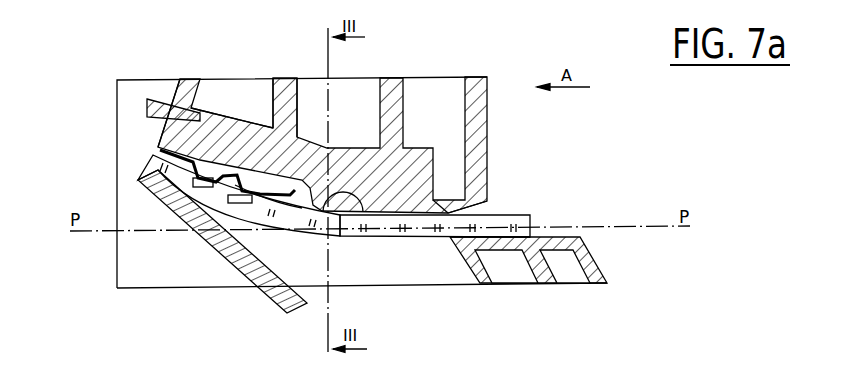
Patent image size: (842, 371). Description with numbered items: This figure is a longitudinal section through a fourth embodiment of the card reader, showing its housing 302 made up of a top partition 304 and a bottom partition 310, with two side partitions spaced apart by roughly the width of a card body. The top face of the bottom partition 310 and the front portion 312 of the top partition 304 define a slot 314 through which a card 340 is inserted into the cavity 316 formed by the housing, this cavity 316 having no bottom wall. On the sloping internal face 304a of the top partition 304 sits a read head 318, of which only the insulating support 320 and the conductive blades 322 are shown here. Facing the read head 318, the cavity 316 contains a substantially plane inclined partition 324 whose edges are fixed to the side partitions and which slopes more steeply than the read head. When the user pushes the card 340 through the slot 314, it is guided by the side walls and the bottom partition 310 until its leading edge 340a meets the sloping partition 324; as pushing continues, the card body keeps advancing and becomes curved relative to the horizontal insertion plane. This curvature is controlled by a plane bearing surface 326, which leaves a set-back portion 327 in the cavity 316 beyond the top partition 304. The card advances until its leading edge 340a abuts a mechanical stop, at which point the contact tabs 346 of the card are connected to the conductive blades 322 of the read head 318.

The housing 302 is at (527, 202).
The top partition 304 is at (413, 118).
The sloping internal face 304a is at (230, 170).
The bottom partition 310 is at (595, 267).
The front portion 312 is at (447, 210).
The slot 314 is at (462, 212).
The cavity 316 is at (302, 320).
The read head 318 is at (203, 158).
The insulating support 320 is at (148, 100).
The conductive blades 322 is at (250, 183).
The inclined partition 324 is at (230, 237).
The plane bearing surface 326 is at (370, 217).
The set-back portion 327 is at (307, 190).
The card 340 is at (437, 238).
The leading edge 340a is at (155, 152).
The contact tabs 346 is at (290, 206).